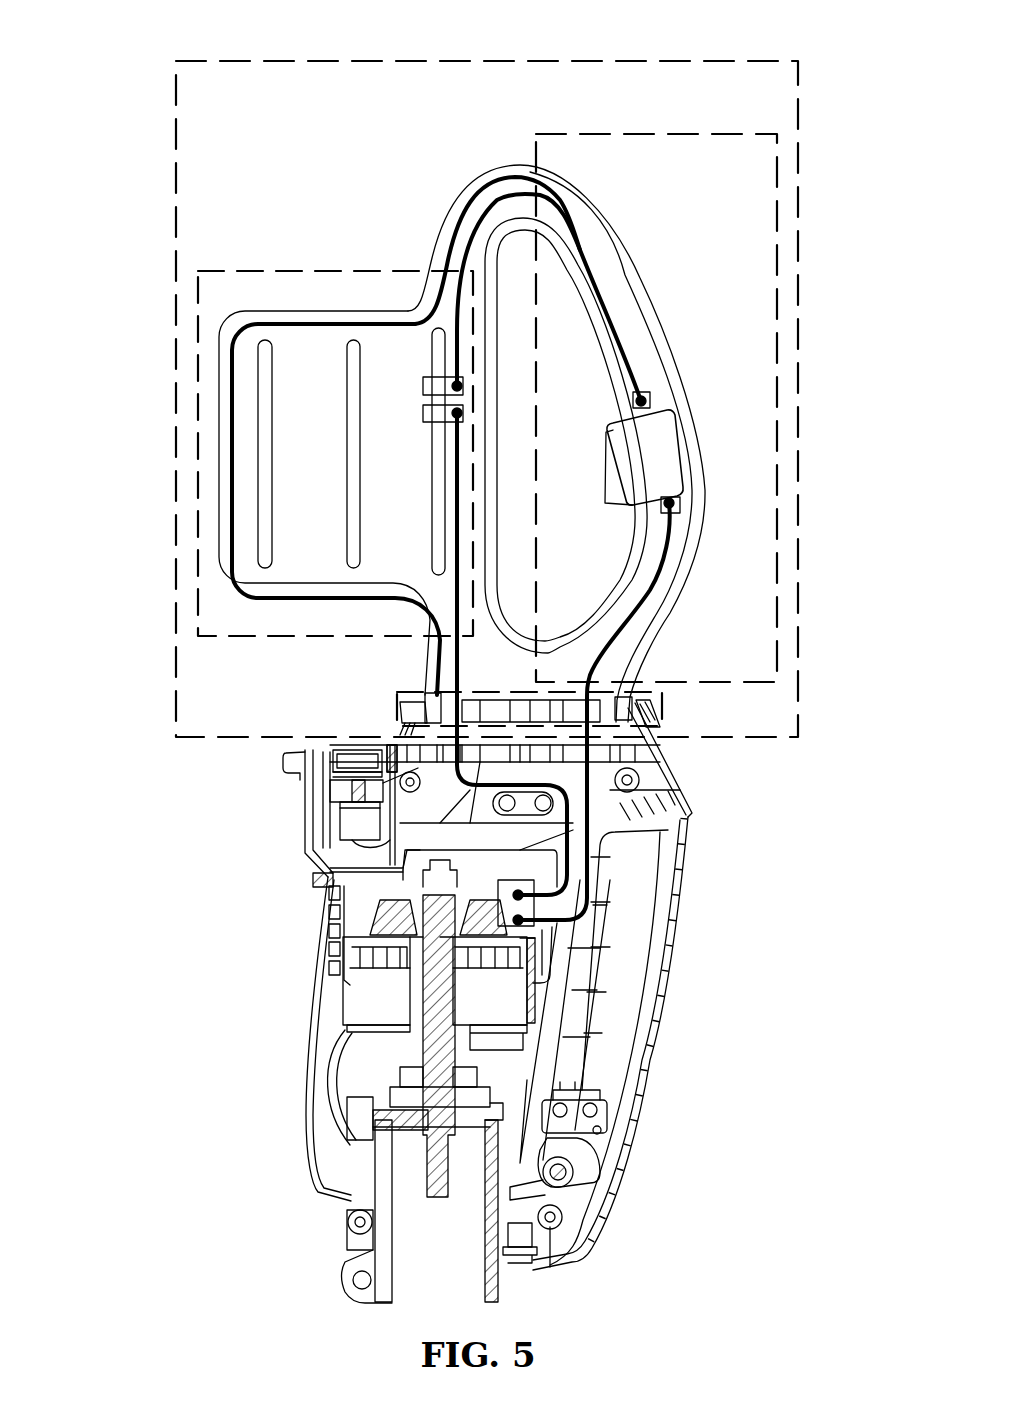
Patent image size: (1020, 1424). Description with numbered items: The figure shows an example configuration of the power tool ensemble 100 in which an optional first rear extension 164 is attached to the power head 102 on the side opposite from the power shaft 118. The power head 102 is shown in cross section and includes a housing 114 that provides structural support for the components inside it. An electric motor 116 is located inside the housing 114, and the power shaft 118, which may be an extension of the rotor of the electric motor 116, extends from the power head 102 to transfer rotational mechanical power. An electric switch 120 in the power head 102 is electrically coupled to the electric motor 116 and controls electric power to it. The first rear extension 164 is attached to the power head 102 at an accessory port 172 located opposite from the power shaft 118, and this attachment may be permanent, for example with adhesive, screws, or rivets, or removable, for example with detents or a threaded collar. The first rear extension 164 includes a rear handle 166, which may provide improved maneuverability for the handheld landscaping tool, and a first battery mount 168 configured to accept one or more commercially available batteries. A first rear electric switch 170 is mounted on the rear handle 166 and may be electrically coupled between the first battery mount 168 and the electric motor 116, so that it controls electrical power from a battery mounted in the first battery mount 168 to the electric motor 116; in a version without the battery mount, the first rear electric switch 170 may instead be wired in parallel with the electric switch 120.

The power tool ensemble 100 is at (122, 130).
The power head 102 is at (234, 1116).
The housing 114 is at (675, 958).
The electric motor 116 is at (360, 1008).
The power shaft 118 is at (437, 1198).
The electric switch 120 is at (600, 1118).
The first rear extension 164 is at (351, 58).
The rear handle 166 is at (684, 128).
The first battery mount 168 is at (304, 268).
The first rear electric switch 170 is at (665, 448).
The accessory port 172 is at (394, 704).